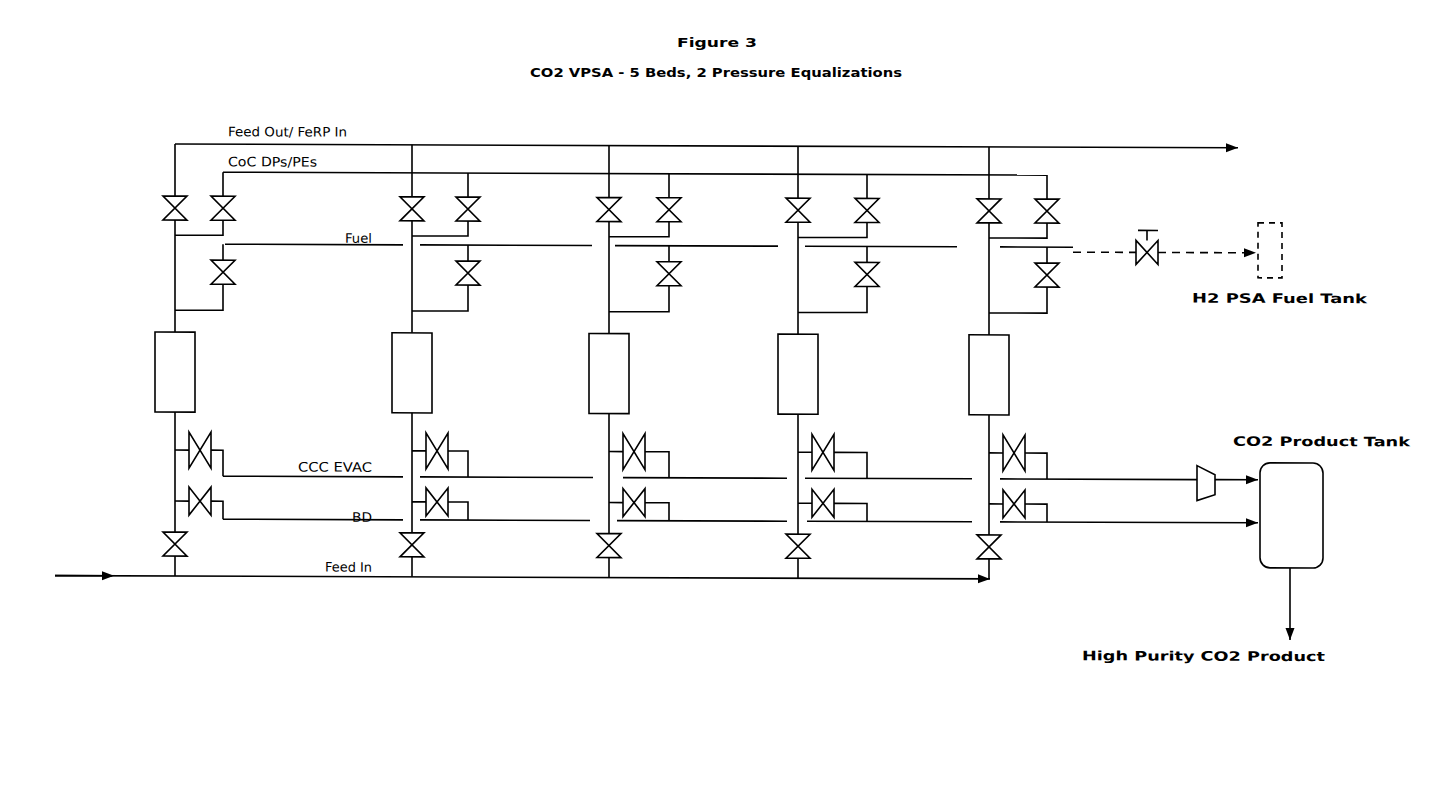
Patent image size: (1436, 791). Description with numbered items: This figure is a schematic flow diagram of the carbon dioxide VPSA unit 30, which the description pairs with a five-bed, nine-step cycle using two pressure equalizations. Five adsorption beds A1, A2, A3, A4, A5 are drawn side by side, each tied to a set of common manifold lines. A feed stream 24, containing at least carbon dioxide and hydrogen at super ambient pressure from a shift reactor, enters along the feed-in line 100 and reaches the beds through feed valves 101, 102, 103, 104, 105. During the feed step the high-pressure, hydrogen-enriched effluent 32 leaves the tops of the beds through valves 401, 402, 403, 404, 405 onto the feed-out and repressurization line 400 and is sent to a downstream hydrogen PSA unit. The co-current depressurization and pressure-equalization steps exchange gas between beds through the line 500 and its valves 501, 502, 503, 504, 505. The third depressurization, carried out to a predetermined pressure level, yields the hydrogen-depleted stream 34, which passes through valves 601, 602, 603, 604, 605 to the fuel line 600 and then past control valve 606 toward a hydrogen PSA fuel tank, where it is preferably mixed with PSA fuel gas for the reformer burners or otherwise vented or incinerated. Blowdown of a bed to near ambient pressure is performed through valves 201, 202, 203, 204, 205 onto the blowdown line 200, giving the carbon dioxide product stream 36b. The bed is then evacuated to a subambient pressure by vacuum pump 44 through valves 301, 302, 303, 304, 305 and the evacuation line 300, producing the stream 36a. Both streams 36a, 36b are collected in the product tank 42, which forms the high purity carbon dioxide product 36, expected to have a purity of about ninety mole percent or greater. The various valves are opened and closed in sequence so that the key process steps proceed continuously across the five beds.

The feed stream 24 is at (92, 570).
The CO2 VPSA unit 30 is at (212, 116).
The high-pressure effluent 32 is at (1278, 150).
The H2-depleted stream 34 is at (1177, 250).
The CO2 product 36 is at (1282, 604).
The evacuation stream 36a is at (1129, 474).
The blowdown CO2 product stream 36b is at (1129, 523).
The product tank 42 is at (1291, 515).
The vacuum pump 44 is at (1196, 457).
The feed in manifold line 100 is at (522, 572).
The blowdown (BD) manifold line 200 is at (597, 518).
The CCC EVAC manifold line 300 is at (597, 469).
The feed out / FeRP in manifold line 400 is at (706, 137).
The CoC DPs/PEs manifold line 500 is at (635, 164).
The fuel manifold line 600 is at (649, 239).
The feed valve bed A1 101 is at (197, 544).
The feed valve bed A2 102 is at (434, 545).
The feed valve bed A3 103 is at (633, 546).
The feed valve bed A4 104 is at (826, 546).
The feed valve bed A5 105 is at (1012, 547).
The blowdown valve bed A1 201 is at (221, 500).
The blowdown valve bed A2 202 is at (462, 501).
The blowdown valve bed A3 203 is at (661, 502).
The blowdown valve bed A4 204 is at (854, 502).
The blowdown valve bed A5 205 is at (1040, 503).
The evacuation valve bed A1 301 is at (221, 448).
The evacuation valve bed A2 302 is at (462, 449).
The evacuation valve bed A3 303 is at (661, 450).
The evacuation valve bed A4 304 is at (854, 450).
The evacuation valve bed A5 305 is at (1040, 451).
The feed out valve bed A1 401 is at (161, 208).
The feed out valve bed A2 402 is at (398, 209).
The feed out valve bed A3 403 is at (595, 209).
The feed out valve bed A4 404 is at (784, 210).
The feed out valve bed A5 405 is at (975, 211).
The pressure equalization valve bed A1 501 is at (238, 208).
The pressure equalization valve bed A2 502 is at (483, 209).
The pressure equalization valve bed A3 503 is at (684, 210).
The pressure equalization valve bed A4 504 is at (882, 210).
The pressure equalization valve bed A5 505 is at (1062, 211).
The fuel valve bed A1 601 is at (231, 282).
The fuel valve bed A2 602 is at (476, 283).
The fuel valve bed A3 603 is at (677, 284).
The fuel valve bed A4 604 is at (875, 284).
The fuel valve bed A5 605 is at (1055, 285).
The control valve CV 606 is at (1160, 237).
The adsorber bed A1 is at (175, 372).
The adsorber bed A2 is at (412, 373).
The adsorber bed A3 is at (609, 373).
The adsorber bed A4 is at (798, 374).
The adsorber bed A5 is at (989, 375).